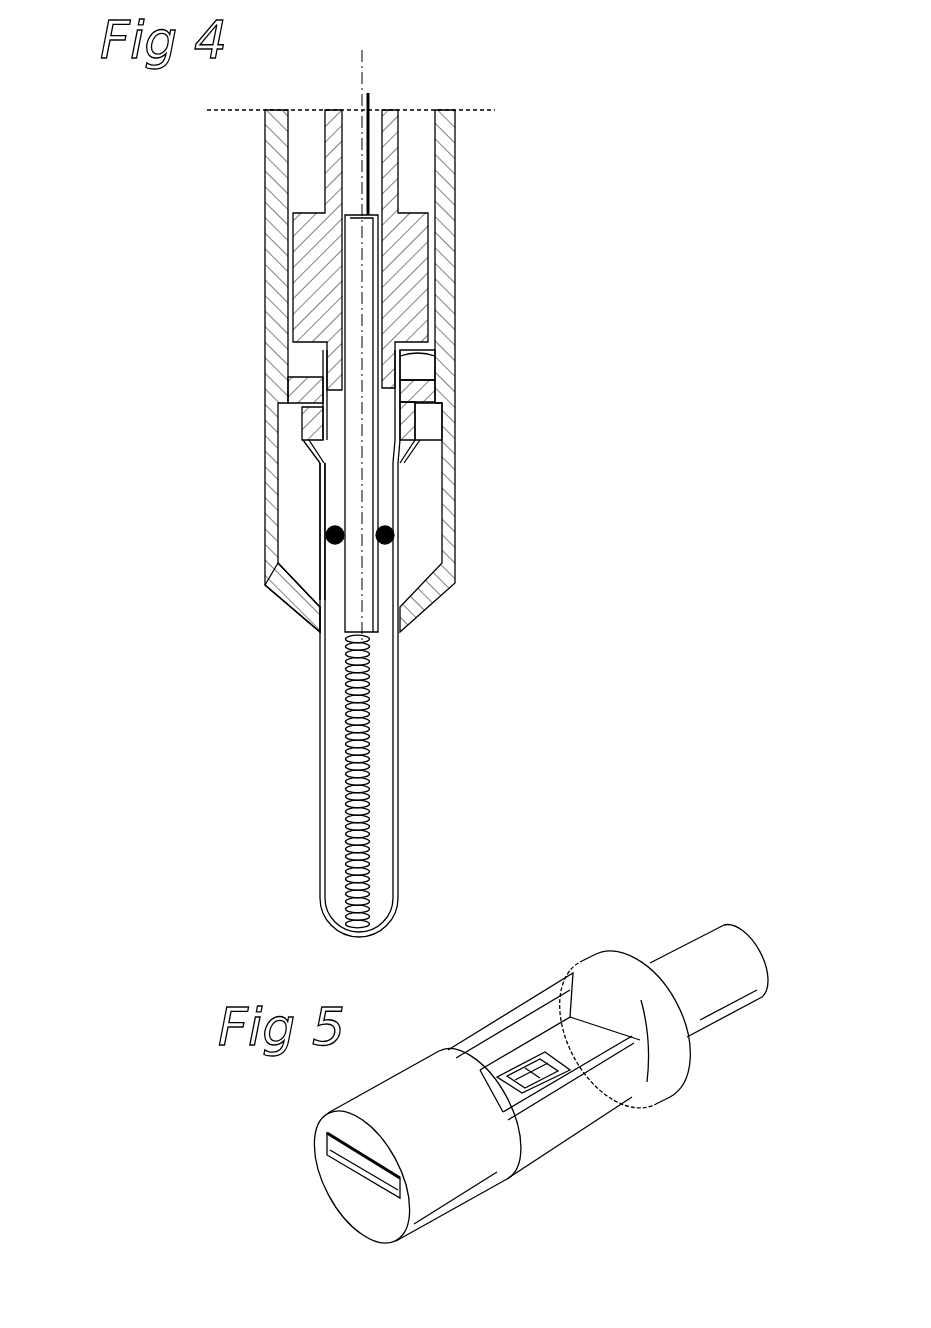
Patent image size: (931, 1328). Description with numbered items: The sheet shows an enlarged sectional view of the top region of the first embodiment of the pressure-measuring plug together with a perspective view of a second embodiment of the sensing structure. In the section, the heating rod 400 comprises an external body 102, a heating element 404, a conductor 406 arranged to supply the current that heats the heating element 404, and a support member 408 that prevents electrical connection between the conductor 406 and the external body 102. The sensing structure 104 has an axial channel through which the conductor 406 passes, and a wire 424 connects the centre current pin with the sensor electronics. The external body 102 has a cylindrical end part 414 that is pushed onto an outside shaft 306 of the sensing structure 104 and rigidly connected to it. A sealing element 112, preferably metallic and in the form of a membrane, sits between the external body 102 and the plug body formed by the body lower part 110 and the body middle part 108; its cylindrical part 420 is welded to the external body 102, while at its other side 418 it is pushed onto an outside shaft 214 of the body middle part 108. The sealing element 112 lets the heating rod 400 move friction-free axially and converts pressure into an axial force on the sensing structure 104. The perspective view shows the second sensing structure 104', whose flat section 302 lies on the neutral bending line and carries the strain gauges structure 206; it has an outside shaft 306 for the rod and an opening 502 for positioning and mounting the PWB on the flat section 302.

In FIG. 4, the heating rod 400 is at (313, 752).
In FIG. 4, the external body 102 is at (398, 735).
In FIG. 4, the sensing structure 104 is at (418, 250).
In FIG. 5, the sensing structure 104' is at (508, 1082).
In FIG. 4, the body middle part 108 is at (455, 197).
In FIG. 4, the body lower part 110 is at (428, 600).
In FIG. 4, the sealing element 112 is at (440, 453).
In FIG. 5, the strain gauges structure 206 is at (527, 1067).
In FIG. 4, the outside shaft 214 is at (313, 406).
In FIG. 5, the flat section 302 is at (560, 1035).
In FIG. 4, the outside shaft 306 is at (398, 347).
In FIG. 5, the outside shaft 306 is at (700, 957).
In FIG. 4, the heating element 404 is at (363, 803).
In FIG. 4, the conductor 406 is at (350, 618).
In FIG. 4, the support member 408 is at (395, 535).
In FIG. 4, the cylindrical end part 414 is at (400, 362).
In FIG. 4, the other side of the sealing element 418 is at (303, 420).
In FIG. 4, the cylindrical part 420 is at (320, 470).
In FIG. 4, the wire 424 is at (370, 100).
In FIG. 5, the opening 502 is at (350, 1161).